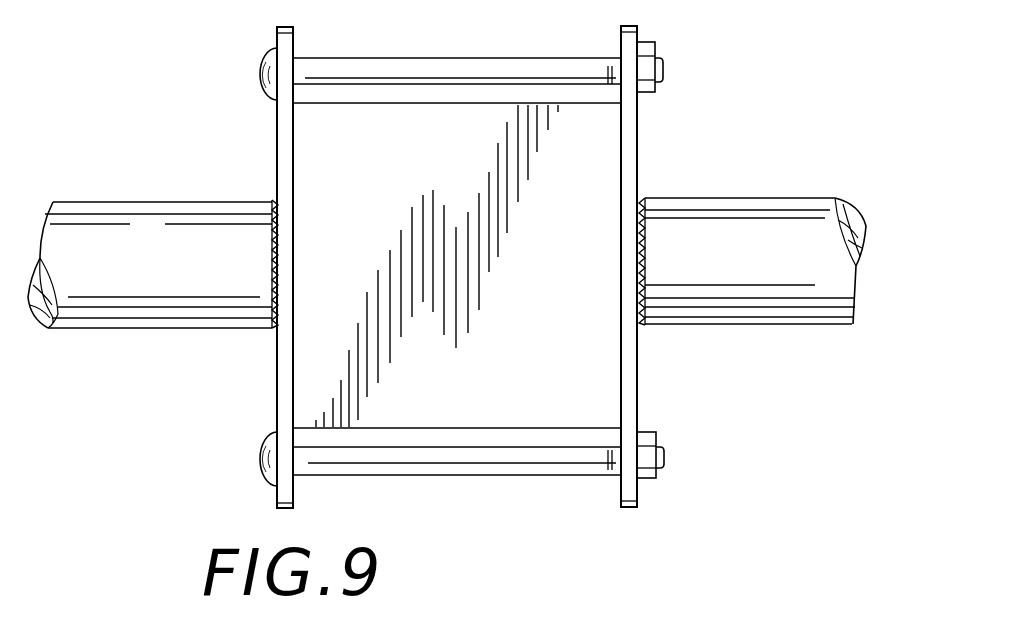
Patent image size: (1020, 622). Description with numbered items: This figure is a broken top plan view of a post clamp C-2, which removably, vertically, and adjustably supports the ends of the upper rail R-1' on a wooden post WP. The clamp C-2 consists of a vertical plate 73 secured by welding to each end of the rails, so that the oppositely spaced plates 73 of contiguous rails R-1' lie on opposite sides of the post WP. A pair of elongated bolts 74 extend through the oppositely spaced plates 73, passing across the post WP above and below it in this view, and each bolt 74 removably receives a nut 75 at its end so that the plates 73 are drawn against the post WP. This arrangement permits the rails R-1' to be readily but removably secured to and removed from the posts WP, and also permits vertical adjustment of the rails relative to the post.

The vertical plate 73 is at (285, 163).
The elongated bolt 74 is at (471, 63).
The nut 75 is at (643, 48).
The upper rail R-1' is at (445, 268).
The post clamp C-2 is at (290, 380).
The wooden post WP is at (413, 188).